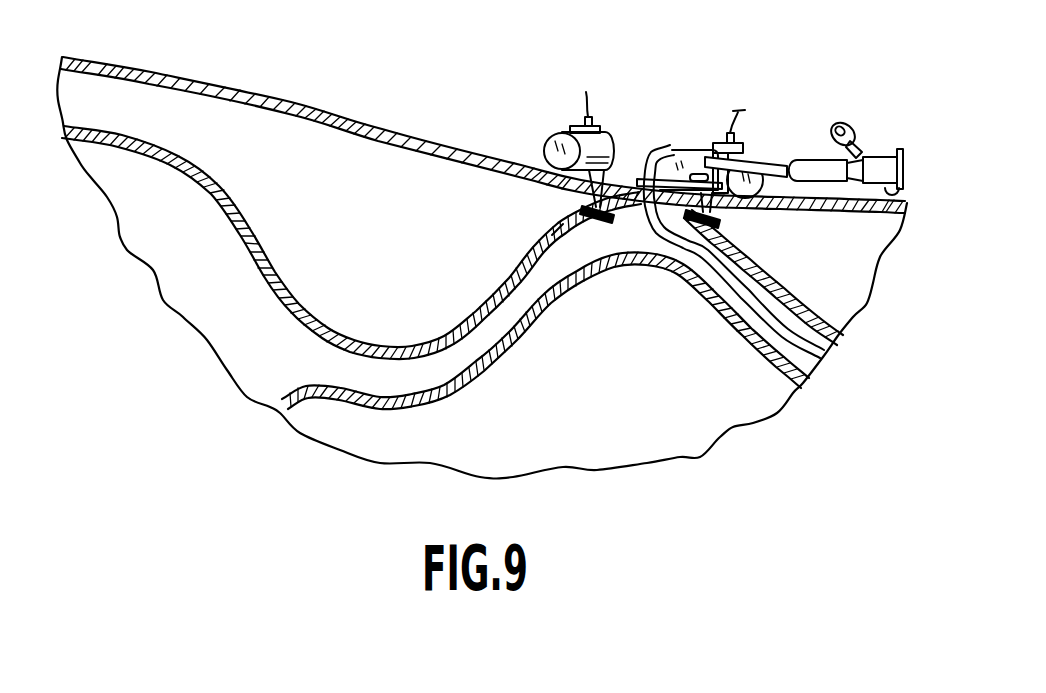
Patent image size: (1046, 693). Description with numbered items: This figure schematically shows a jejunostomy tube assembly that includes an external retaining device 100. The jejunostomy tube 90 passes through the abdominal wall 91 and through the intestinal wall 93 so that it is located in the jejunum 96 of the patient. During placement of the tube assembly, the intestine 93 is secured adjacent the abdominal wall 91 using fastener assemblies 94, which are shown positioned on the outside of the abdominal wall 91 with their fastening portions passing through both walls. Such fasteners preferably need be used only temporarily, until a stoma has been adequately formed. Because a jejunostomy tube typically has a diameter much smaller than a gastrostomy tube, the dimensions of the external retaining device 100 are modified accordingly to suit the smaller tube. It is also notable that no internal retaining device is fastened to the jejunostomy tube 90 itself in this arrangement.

The jejunostomy tube 90 is at (771, 165).
The abdominal wall 91 is at (287, 110).
The intestinal wall 93 is at (530, 270).
The fastener assemblies 94 is at (550, 130).
The jejunum 96 is at (577, 243).
The external retaining device 100 is at (674, 145).